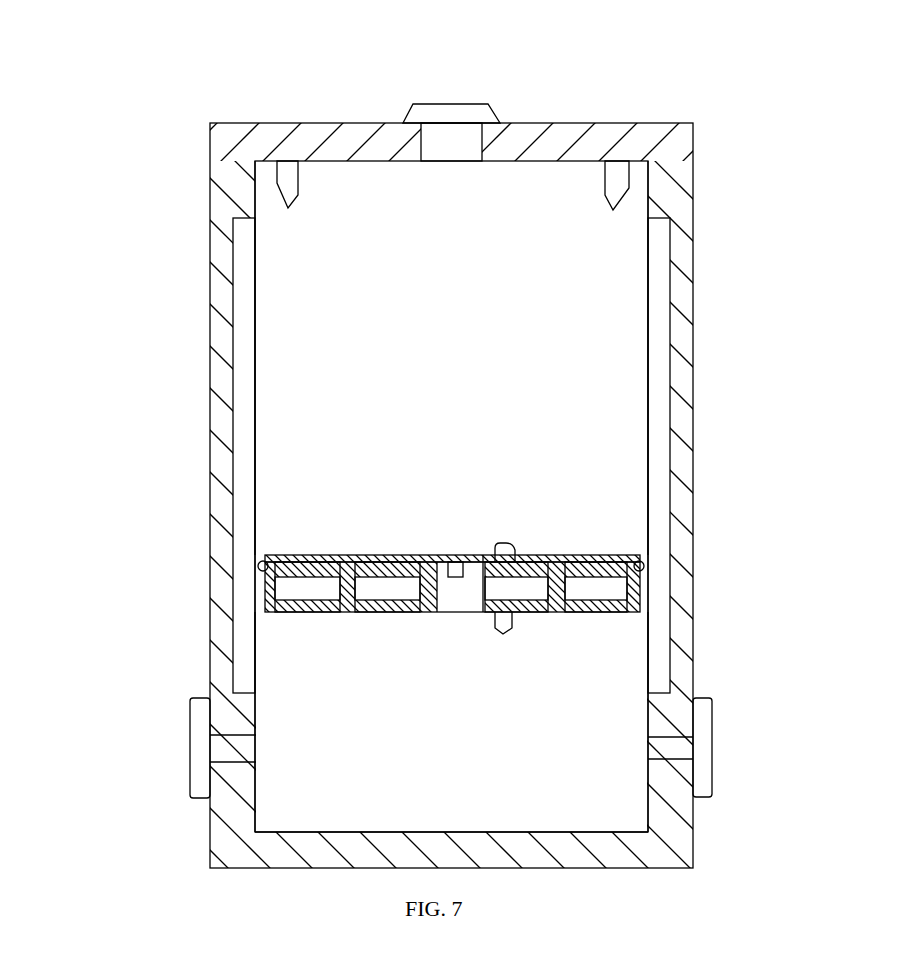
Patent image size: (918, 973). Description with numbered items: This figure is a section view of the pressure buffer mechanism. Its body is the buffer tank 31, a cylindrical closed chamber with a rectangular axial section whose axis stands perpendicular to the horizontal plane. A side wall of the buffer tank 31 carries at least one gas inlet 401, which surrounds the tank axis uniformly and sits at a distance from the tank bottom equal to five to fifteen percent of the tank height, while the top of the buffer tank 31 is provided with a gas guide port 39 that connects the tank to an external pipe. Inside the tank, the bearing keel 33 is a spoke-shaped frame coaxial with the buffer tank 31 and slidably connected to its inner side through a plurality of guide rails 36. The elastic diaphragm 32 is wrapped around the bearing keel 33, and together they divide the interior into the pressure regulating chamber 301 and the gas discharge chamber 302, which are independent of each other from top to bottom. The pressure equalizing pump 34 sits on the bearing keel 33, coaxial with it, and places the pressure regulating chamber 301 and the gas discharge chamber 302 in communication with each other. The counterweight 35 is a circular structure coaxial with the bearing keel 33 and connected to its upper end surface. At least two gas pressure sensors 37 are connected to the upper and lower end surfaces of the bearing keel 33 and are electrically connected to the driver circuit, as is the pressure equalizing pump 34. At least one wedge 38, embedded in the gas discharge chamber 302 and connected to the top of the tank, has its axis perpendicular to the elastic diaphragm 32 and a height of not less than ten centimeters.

The buffer tank 31 is at (459, 486).
The elastic diaphragm 32 is at (446, 498).
The bearing keel 33 is at (483, 547).
The pressure equalizing pump 34 is at (497, 538).
The counterweight 35 is at (374, 443).
The guide rails 36 is at (389, 455).
The pressure sensors 37 is at (538, 625).
The wedge 38 is at (368, 197).
The gas guide port 39 is at (491, 72).
The pressure regulating chamber 301 is at (544, 723).
The gas discharge chamber 302 is at (537, 358).
The gas inlet 401 is at (381, 769).